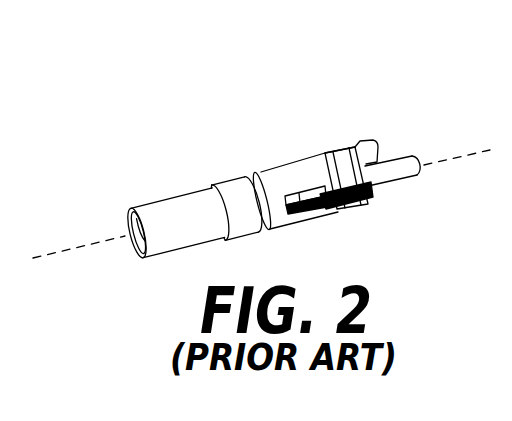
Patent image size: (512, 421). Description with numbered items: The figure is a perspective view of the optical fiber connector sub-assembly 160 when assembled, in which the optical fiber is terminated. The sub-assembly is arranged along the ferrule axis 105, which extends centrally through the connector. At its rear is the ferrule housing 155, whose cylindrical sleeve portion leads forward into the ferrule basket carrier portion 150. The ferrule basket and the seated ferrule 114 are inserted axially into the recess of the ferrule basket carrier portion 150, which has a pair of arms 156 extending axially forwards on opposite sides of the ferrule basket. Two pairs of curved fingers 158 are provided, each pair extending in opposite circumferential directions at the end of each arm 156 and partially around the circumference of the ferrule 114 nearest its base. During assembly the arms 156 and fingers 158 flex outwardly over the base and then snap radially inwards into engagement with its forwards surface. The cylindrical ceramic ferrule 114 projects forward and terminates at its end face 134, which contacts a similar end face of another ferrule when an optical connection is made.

The ferrule axis 105 is at (83, 247).
The optical fiber connector sub-assembly 160 is at (241, 100).
The ferrule housing 155 is at (214, 162).
The ferrule basket carrier portion 150 is at (288, 173).
The arms 156 is at (324, 152).
The curved fingers 158 is at (372, 141).
The ferrule 114 is at (397, 160).
The end face 134 is at (418, 164).